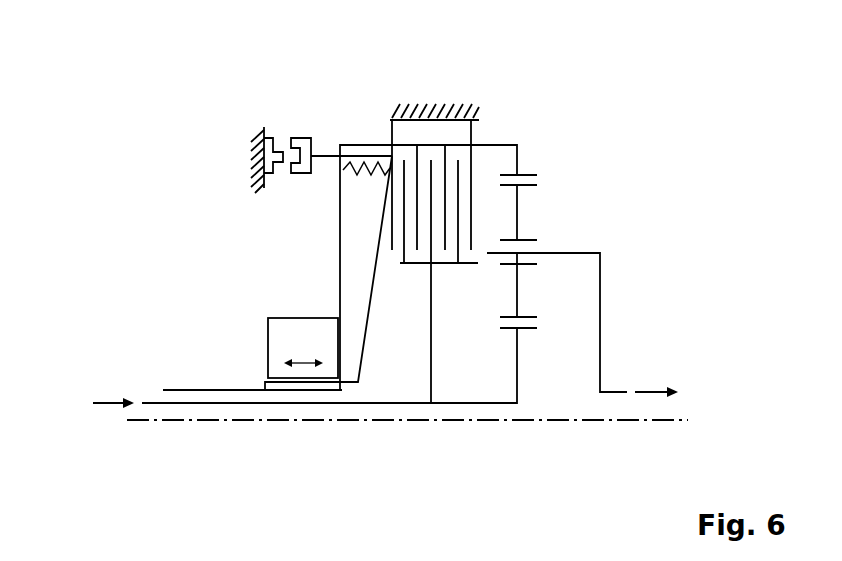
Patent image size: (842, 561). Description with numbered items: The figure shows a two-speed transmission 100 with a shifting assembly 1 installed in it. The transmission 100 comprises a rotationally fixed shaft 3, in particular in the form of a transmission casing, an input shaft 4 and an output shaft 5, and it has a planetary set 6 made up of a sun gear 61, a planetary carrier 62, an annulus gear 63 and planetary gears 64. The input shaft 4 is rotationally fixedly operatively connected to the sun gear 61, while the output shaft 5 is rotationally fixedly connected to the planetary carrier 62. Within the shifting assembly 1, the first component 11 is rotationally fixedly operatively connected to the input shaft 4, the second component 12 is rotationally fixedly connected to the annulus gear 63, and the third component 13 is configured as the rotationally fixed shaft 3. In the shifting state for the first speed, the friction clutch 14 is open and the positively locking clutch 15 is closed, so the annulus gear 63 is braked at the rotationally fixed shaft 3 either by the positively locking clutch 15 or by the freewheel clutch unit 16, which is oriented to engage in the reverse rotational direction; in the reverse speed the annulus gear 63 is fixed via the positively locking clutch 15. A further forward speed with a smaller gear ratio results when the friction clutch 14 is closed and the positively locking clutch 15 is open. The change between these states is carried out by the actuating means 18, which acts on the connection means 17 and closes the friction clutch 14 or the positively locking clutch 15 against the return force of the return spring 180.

The transmission 100 is at (106, 114).
The shifting assembly 1 is at (217, 164).
The third component 13 is at (250, 126).
The rotationally fixed shaft 3 is at (442, 108).
The positively locking clutch 15 is at (279, 138).
The connection means 17 is at (319, 154).
The second component 12 is at (347, 145).
The freewheel clutch unit 16 is at (391, 148).
The friction clutch 14 is at (406, 200).
The return spring 180 is at (390, 174).
The actuating means 18 is at (275, 338).
The first component 11 is at (435, 352).
The annulus gear 63 is at (518, 162).
The planetary set 6 is at (558, 209).
The planetary carrier 62 is at (563, 253).
The planetary gears 64 is at (518, 280).
The sun gear 61 is at (518, 358).
The output shaft 5 is at (608, 390).
The input shaft 4 is at (176, 403).